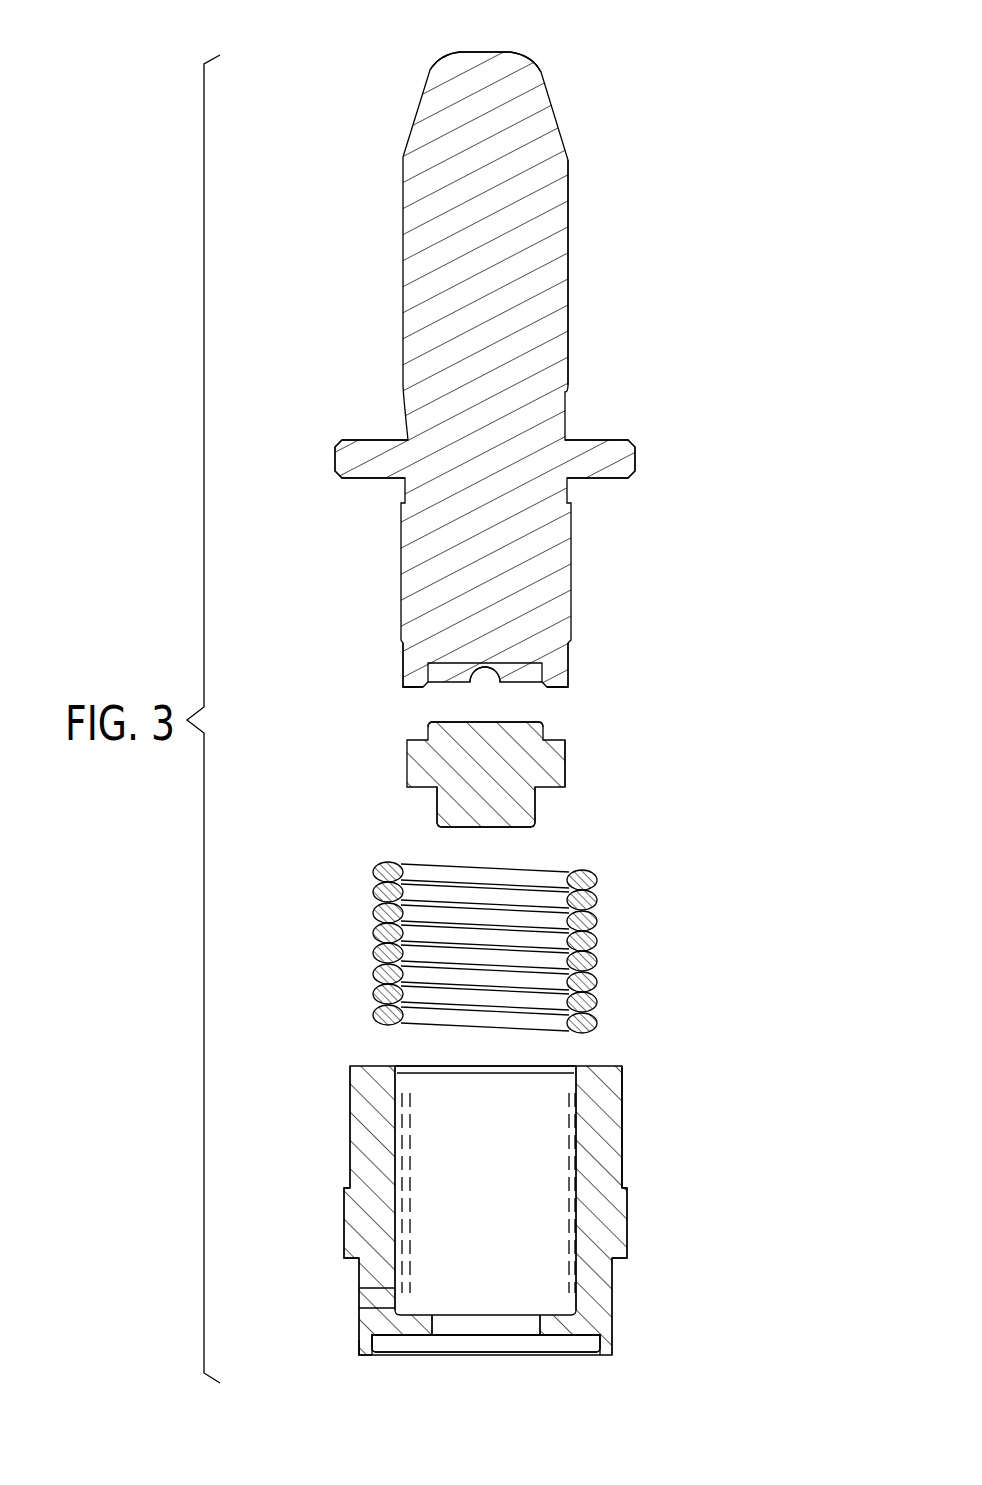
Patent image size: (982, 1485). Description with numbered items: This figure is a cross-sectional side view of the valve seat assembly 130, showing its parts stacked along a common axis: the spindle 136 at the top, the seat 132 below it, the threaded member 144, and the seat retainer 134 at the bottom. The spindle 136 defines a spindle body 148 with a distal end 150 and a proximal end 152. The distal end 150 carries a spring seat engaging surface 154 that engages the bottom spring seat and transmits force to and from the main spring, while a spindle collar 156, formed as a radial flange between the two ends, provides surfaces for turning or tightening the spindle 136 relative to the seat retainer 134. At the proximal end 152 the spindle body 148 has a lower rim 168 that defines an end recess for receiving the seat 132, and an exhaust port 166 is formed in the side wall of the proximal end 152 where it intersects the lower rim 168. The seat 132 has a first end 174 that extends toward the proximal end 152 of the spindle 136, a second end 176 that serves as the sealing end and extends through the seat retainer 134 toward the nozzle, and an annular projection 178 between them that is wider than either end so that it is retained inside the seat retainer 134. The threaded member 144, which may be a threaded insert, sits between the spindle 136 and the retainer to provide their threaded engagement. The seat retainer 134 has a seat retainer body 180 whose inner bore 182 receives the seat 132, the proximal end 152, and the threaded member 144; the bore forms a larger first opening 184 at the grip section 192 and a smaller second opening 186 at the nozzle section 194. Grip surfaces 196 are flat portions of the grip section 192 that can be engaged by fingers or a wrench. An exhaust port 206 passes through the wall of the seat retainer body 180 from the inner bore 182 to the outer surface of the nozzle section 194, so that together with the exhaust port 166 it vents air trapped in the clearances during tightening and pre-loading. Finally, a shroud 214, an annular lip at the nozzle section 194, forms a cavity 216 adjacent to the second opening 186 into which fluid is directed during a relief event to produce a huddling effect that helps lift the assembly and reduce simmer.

The valve seat assembly 130 is at (278, 298).
The seat 132 is at (388, 769).
The seat retainer 134 is at (328, 1196).
The spindle 136 is at (370, 193).
The threaded member 144 is at (590, 940).
The spindle body 148 is at (568, 330).
The distal end 150 is at (604, 82).
The proximal end 152 is at (600, 671).
The spring seat engaging surface 154 is at (470, 52).
The spindle collar 156 is at (635, 470).
The exhaust port 166 is at (468, 670).
The lower rim 168 is at (527, 688).
The first end 174 is at (440, 722).
The second end 176 is at (462, 827).
The annular projection 178 is at (565, 760).
The seat retainer body 180 is at (627, 1240).
The inner bore 182 is at (418, 1117).
The first opening 184 is at (575, 1065).
The second opening 186 is at (495, 1338).
The grip section 192 is at (622, 1110).
The nozzle section 194 is at (612, 1303).
The grip surfaces 196 is at (350, 1157).
The exhaust port 206 is at (383, 1292).
The shroud 214 is at (365, 1350).
The cavity 216 is at (448, 1346).